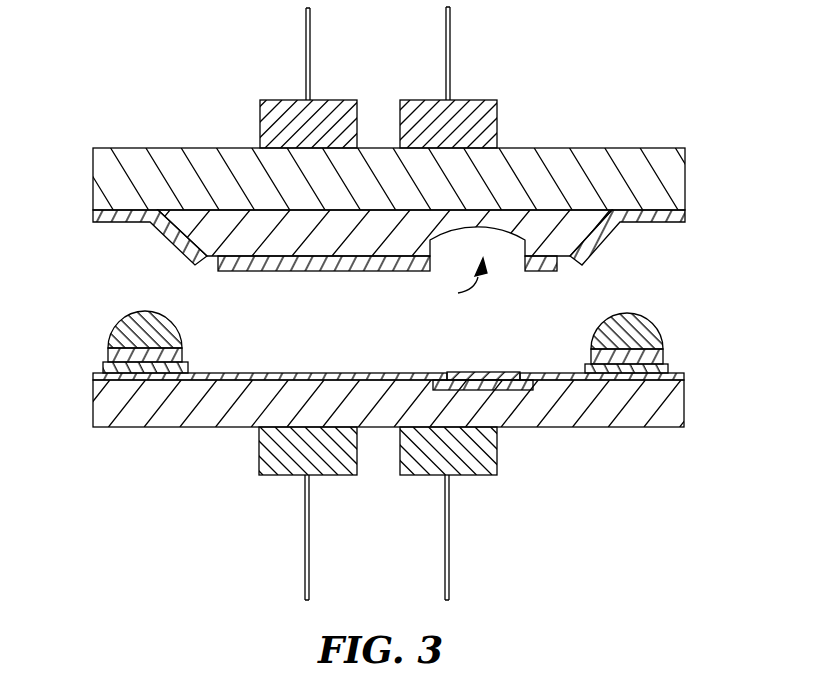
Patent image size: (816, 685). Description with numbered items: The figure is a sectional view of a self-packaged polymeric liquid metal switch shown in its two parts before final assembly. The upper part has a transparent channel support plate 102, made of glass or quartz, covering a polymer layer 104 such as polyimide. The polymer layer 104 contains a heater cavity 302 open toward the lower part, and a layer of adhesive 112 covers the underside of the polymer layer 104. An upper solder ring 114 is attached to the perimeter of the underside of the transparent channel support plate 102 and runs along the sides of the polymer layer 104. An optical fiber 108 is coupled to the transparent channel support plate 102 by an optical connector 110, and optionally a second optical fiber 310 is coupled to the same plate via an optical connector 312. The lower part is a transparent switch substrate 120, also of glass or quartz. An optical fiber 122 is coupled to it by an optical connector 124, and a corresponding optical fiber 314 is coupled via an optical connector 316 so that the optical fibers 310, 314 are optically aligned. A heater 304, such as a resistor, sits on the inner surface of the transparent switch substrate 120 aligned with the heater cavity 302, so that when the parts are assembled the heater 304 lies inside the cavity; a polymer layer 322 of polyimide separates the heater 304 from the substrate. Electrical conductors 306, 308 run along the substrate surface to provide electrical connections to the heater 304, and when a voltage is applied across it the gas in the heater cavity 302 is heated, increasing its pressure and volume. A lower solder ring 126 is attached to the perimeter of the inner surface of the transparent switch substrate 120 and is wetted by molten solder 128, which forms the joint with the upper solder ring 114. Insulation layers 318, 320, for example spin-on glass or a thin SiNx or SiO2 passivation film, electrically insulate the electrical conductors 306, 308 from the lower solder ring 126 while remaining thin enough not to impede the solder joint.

The transparent channel support plate 102 is at (590, 148).
The polymer layer 104 is at (230, 218).
The optical fiber 108 is at (450, 63).
The optical connector 110 is at (498, 120).
The layer of adhesive 112 is at (270, 272).
The upper solder ring 114 is at (103, 223).
The transparent switch substrate 120 is at (684, 428).
The optical fiber 122 is at (450, 520).
The optical connector 124 is at (497, 462).
The lower solder ring 126 is at (200, 342).
The molten solder 128 is at (150, 312).
The heater cavity 302 is at (453, 283).
The heater 304 is at (478, 372).
The electrical conductor 306 is at (93, 377).
The electrical conductor 308 is at (685, 380).
The second optical fiber 310 is at (310, 63).
The optical connector 312 is at (358, 120).
The optical fiber 314 is at (310, 520).
The optical connector 316 is at (259, 460).
The insulation layer 318 is at (103, 367).
The insulation layer 320 is at (670, 371).
The polymer layer 322 is at (542, 384).